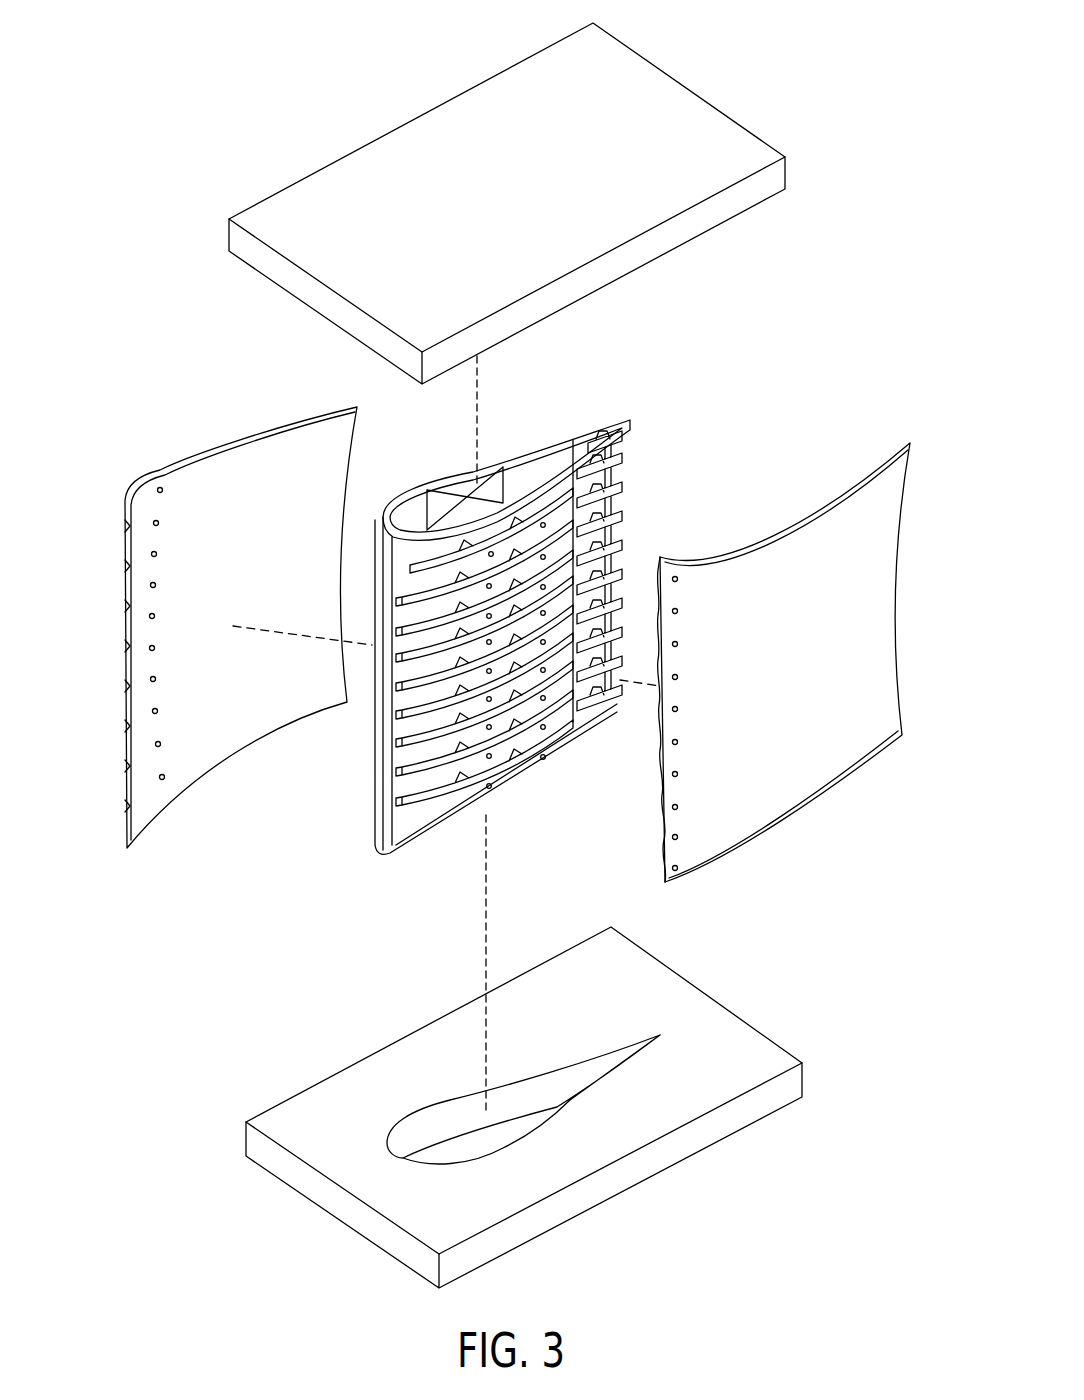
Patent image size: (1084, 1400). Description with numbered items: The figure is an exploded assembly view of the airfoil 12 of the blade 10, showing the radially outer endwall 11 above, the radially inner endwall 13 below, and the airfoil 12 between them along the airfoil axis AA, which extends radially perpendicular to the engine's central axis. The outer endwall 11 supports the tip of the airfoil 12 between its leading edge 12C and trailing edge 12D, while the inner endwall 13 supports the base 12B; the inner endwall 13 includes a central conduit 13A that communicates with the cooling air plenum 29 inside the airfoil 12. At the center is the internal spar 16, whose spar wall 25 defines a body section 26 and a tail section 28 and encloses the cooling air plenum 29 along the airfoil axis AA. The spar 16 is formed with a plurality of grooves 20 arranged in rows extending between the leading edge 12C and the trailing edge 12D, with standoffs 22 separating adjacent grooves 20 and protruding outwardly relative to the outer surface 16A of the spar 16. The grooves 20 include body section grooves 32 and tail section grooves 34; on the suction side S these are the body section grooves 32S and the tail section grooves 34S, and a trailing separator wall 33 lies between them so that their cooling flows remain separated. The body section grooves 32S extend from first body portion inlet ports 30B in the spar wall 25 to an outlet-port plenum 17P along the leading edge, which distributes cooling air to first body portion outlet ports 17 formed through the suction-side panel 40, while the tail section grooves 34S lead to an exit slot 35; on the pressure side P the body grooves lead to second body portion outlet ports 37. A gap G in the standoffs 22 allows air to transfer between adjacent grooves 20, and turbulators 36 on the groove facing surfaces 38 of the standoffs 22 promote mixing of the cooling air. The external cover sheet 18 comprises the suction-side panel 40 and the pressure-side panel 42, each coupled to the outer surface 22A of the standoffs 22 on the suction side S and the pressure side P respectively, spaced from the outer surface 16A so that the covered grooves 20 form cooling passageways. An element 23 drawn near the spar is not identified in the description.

The blade 10 is at (177, 75).
The radially outer endwall 11 is at (372, 158).
The airfoil 12 is at (282, 330).
The radially inner endwall 13 is at (277, 1172).
The central conduit 13A is at (543, 1122).
The airfoil axis AA is at (488, 954).
The pressure-side panel 42 is at (202, 438).
The second body portion outlet ports 37 is at (160, 485).
The pressure side P is at (115, 523).
The suction-side panel 40 is at (782, 508).
The first body portion outlet ports 17 is at (676, 575).
The external cover sheet 18 is at (870, 561).
The suction side S is at (906, 664).
The turbulator 36 is at (402, 788).
The body section 26 is at (405, 483).
The cooling air plenum 29 is at (462, 487).
The spar wall 25 is at (525, 460).
The wall 23 is at (585, 455).
The trailing separator wall 33 is at (587, 440).
The tail section 28 is at (612, 417).
The outlet-port plenum 17P is at (393, 530).
The groove facing surfaces 38 is at (427, 593).
The tail section grooves 34 is at (588, 727).
The suction-side tail section grooves 34S is at (612, 462).
The exit slot 35 is at (632, 490).
The trailing edge 12D is at (618, 560).
The base 12B is at (580, 730).
The leading edge 12C is at (375, 625).
The gap G is at (383, 718).
The internal spar 16 is at (353, 753).
The standoffs 22 is at (405, 833).
The outer surface of the spar 16A is at (437, 768).
The outer surface of the standoffs 22A is at (465, 802).
The first body portion inlet ports 30B is at (468, 767).
The grooves 20 is at (497, 810).
The body section grooves 32 is at (525, 783).
The suction-side body section grooves 32S is at (527, 768).